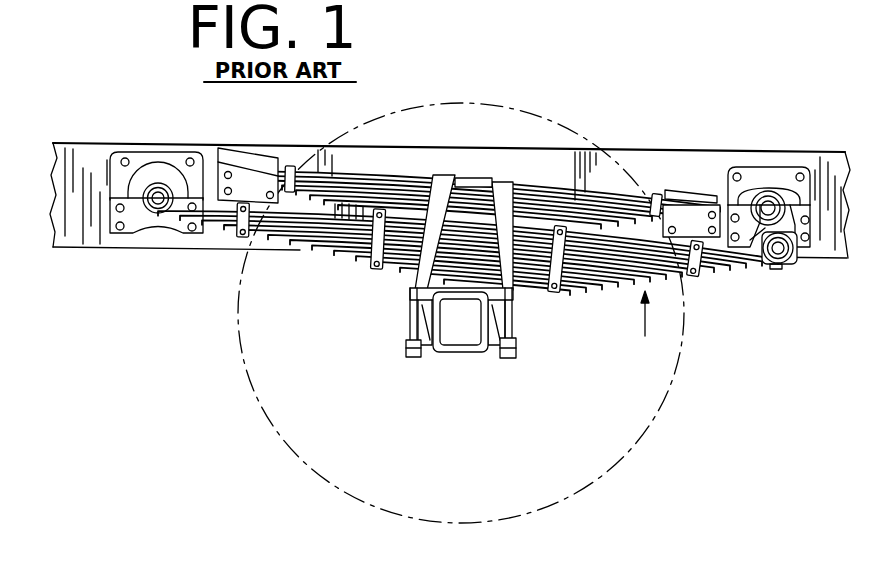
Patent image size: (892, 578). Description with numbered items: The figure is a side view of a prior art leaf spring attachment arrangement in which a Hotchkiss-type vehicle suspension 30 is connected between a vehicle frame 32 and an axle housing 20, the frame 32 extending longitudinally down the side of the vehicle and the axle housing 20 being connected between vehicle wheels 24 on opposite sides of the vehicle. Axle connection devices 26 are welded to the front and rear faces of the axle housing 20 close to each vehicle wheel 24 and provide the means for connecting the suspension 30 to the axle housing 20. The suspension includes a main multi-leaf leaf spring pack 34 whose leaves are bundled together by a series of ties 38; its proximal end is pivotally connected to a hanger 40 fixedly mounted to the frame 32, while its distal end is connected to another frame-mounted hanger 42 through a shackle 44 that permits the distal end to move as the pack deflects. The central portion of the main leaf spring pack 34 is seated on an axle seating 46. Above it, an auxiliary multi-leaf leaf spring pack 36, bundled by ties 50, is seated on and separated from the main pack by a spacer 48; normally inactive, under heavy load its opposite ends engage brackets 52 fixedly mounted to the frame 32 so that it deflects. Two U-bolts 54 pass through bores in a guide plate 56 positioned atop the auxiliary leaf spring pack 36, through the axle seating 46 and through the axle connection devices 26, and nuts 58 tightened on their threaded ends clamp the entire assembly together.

The axle housing 20 is at (453, 356).
The vehicle wheels 24 is at (641, 445).
The axle connection devices 26 is at (411, 321).
The vehicle suspension 30 is at (645, 324).
The frame 32 is at (638, 168).
The main multi-leaf leaf spring pack 34 is at (663, 279).
The auxiliary multi-leaf leaf spring pack 36 is at (575, 152).
The ties 38 is at (240, 238).
The hanger 40 is at (158, 151).
The hanger 42 is at (813, 187).
The shackle 44 is at (792, 263).
The axle seating 46 is at (514, 303).
The spacer 48 is at (517, 233).
The ties 50 is at (290, 168).
The brackets 52 is at (258, 158).
The U-bolts 54 is at (447, 177).
The guide plate 56 is at (472, 180).
The nuts 58 is at (405, 350).